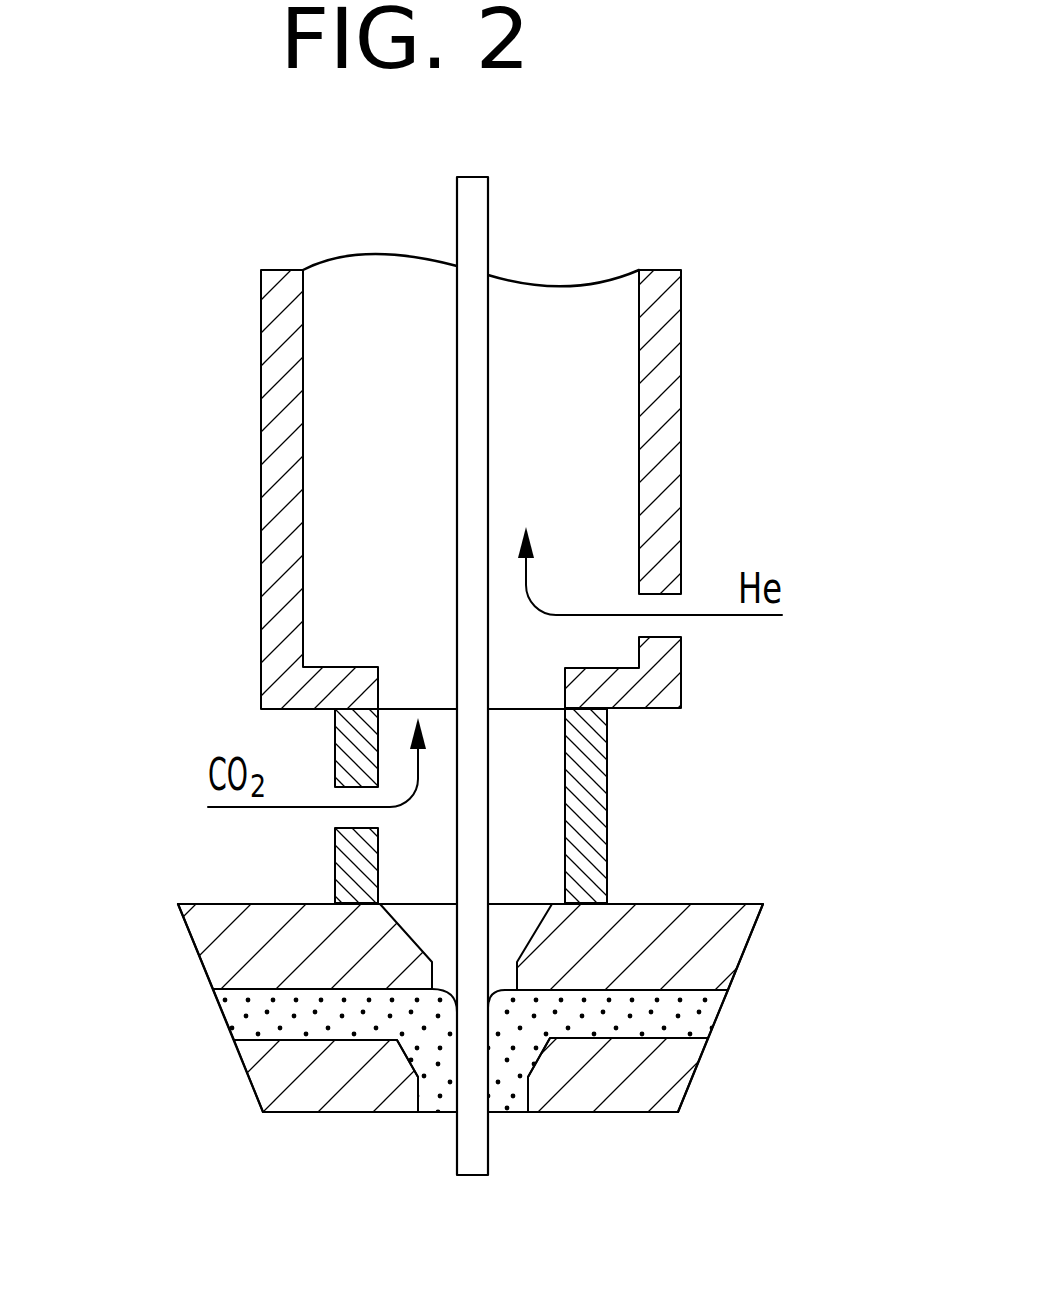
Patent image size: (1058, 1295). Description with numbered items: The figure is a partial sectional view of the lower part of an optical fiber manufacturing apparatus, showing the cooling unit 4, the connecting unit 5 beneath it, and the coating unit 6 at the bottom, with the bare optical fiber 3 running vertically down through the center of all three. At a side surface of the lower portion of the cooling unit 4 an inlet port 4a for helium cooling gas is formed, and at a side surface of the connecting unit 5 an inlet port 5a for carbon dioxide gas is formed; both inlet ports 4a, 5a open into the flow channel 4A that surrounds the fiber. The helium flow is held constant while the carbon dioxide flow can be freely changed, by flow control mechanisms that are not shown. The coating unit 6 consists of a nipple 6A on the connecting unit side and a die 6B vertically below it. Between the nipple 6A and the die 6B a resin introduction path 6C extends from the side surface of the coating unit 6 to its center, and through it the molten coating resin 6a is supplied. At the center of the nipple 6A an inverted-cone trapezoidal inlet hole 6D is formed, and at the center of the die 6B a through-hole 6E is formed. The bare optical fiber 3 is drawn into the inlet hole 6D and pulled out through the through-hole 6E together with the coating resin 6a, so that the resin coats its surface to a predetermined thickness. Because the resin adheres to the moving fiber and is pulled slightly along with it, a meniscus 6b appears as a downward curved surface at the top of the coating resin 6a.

The bare optical fiber 3 is at (488, 240).
The cooling unit 4 is at (225, 473).
The flow channel 4A is at (652, 485).
The inlet port 4a is at (663, 624).
The connecting unit 5 is at (643, 752).
The inlet port 5a is at (352, 828).
The coating unit 6 is at (474, 1008).
The nipple 6A is at (227, 953).
The die 6B is at (663, 1078).
The resin introduction path 6C is at (653, 1038).
The inlet hole 6D is at (548, 915).
The through-hole 6E is at (423, 1097).
The coating resin 6a is at (250, 1005).
The meniscus 6b is at (517, 962).